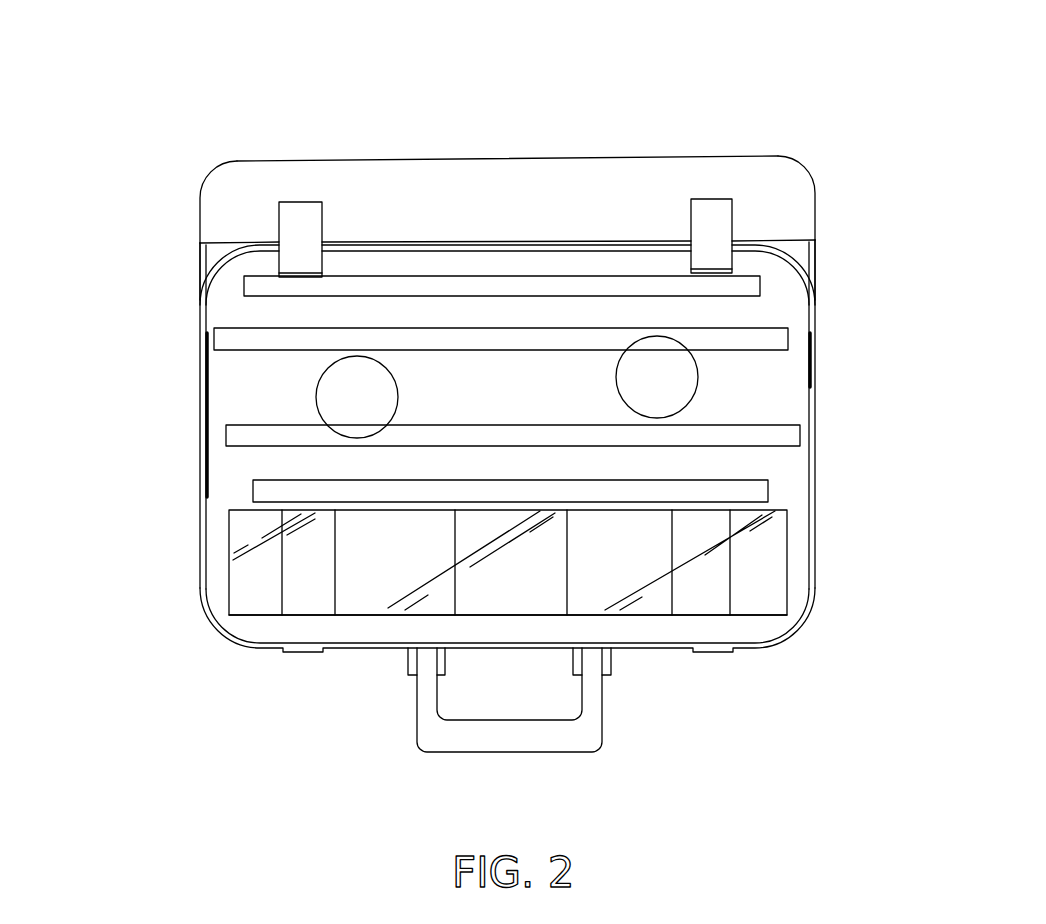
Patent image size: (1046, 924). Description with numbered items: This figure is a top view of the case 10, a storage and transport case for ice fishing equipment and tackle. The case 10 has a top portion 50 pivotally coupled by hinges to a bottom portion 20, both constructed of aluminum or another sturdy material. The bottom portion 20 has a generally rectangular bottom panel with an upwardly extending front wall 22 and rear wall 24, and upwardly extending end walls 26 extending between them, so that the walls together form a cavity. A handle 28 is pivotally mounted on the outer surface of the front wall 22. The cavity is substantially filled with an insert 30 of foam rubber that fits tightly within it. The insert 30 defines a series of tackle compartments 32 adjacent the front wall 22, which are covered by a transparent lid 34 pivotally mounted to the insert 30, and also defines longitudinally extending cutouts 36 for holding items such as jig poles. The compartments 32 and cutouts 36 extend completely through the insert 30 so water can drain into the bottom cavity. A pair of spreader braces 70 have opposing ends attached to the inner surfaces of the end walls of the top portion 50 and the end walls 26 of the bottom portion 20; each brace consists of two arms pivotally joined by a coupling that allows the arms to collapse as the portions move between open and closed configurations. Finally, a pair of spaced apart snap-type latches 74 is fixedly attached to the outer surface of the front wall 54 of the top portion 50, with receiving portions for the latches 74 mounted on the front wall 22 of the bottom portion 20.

The case 10 is at (803, 95).
The bottom portion 20 is at (187, 433).
The front wall 22 is at (357, 650).
The rear wall 24 is at (500, 247).
The end walls 26 is at (198, 542).
The handle 28 is at (487, 752).
The insert 30 is at (780, 395).
The tackle compartments 32 is at (790, 555).
The transparent lid 34 is at (762, 615).
The cutouts 36 is at (450, 435).
The top portion 50 is at (177, 180).
The front wall 54 is at (492, 160).
The spreader braces 70 is at (200, 260).
The snap-type latches 74 is at (322, 216).